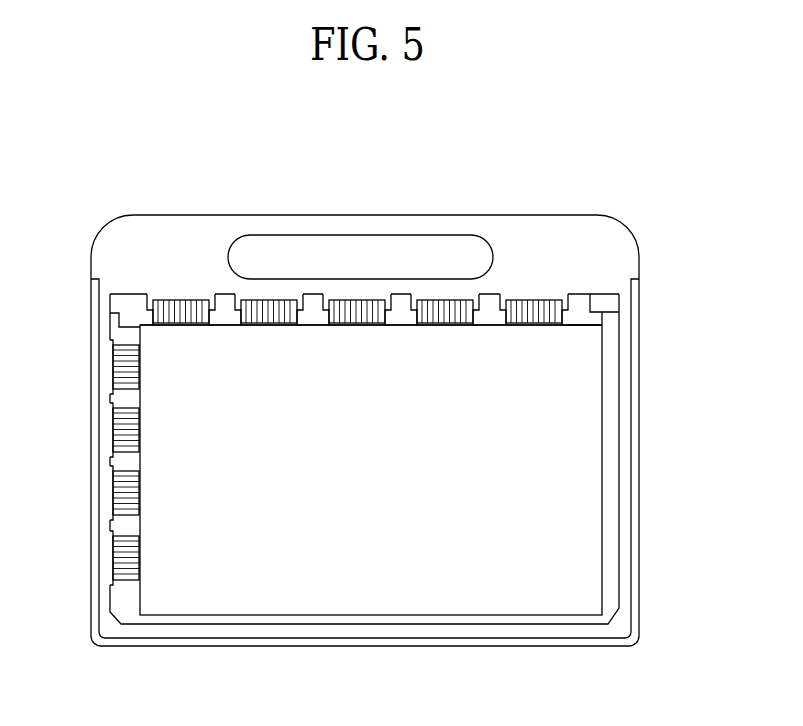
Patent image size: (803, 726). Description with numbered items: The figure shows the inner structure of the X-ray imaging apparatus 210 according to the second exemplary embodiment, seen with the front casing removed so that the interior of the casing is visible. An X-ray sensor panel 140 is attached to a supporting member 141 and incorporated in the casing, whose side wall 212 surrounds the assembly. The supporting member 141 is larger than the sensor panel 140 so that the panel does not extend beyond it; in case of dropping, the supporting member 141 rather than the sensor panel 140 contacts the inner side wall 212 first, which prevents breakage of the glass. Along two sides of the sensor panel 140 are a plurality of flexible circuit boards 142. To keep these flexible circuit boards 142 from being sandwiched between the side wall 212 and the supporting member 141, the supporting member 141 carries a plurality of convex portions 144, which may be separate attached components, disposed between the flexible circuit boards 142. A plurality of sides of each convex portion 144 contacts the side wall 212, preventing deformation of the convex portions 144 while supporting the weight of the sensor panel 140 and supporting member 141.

The cover 210 is at (602, 216).
The side wall 212 is at (640, 393).
The X-ray sensor panel 140 is at (590, 466).
The supporting member 141 is at (364, 429).
The flexible circuit boards 142 is at (556, 308).
The convex portions 144 is at (496, 308).